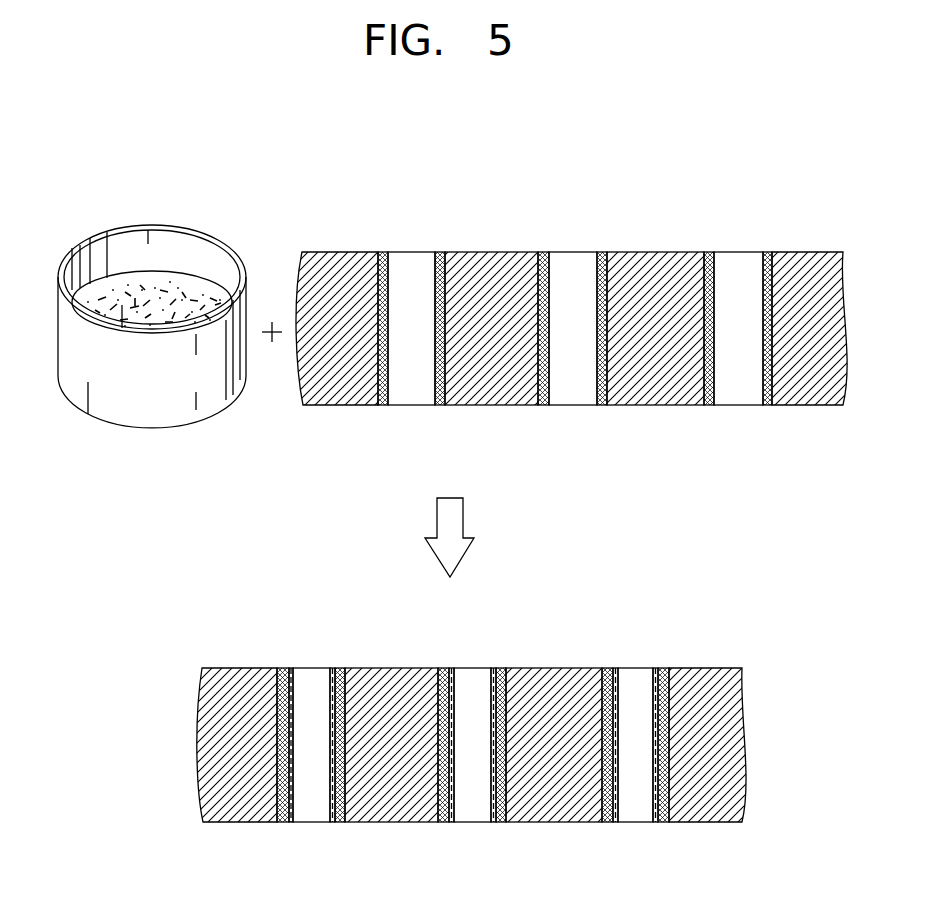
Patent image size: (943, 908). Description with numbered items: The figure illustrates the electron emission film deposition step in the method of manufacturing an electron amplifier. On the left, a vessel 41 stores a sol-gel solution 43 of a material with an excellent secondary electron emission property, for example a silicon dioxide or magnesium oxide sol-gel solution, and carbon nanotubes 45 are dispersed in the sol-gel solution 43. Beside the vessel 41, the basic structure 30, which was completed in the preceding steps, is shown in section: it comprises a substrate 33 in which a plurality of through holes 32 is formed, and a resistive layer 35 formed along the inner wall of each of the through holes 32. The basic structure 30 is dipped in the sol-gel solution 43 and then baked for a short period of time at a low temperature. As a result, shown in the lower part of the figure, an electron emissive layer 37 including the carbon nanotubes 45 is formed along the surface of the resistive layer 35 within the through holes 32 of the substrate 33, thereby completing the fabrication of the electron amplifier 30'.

The basic structure 30 is at (522, 516).
The electron amplifier 30' is at (482, 692).
The through holes 32 is at (570, 258).
The substrate 33 is at (336, 253).
The resistive layer 35 is at (383, 253).
The electron emissive layer 37 is at (295, 668).
The vessel 41 is at (236, 250).
The sol-gel solution 43 is at (82, 290).
The carbon nanotubes 45 is at (125, 285).